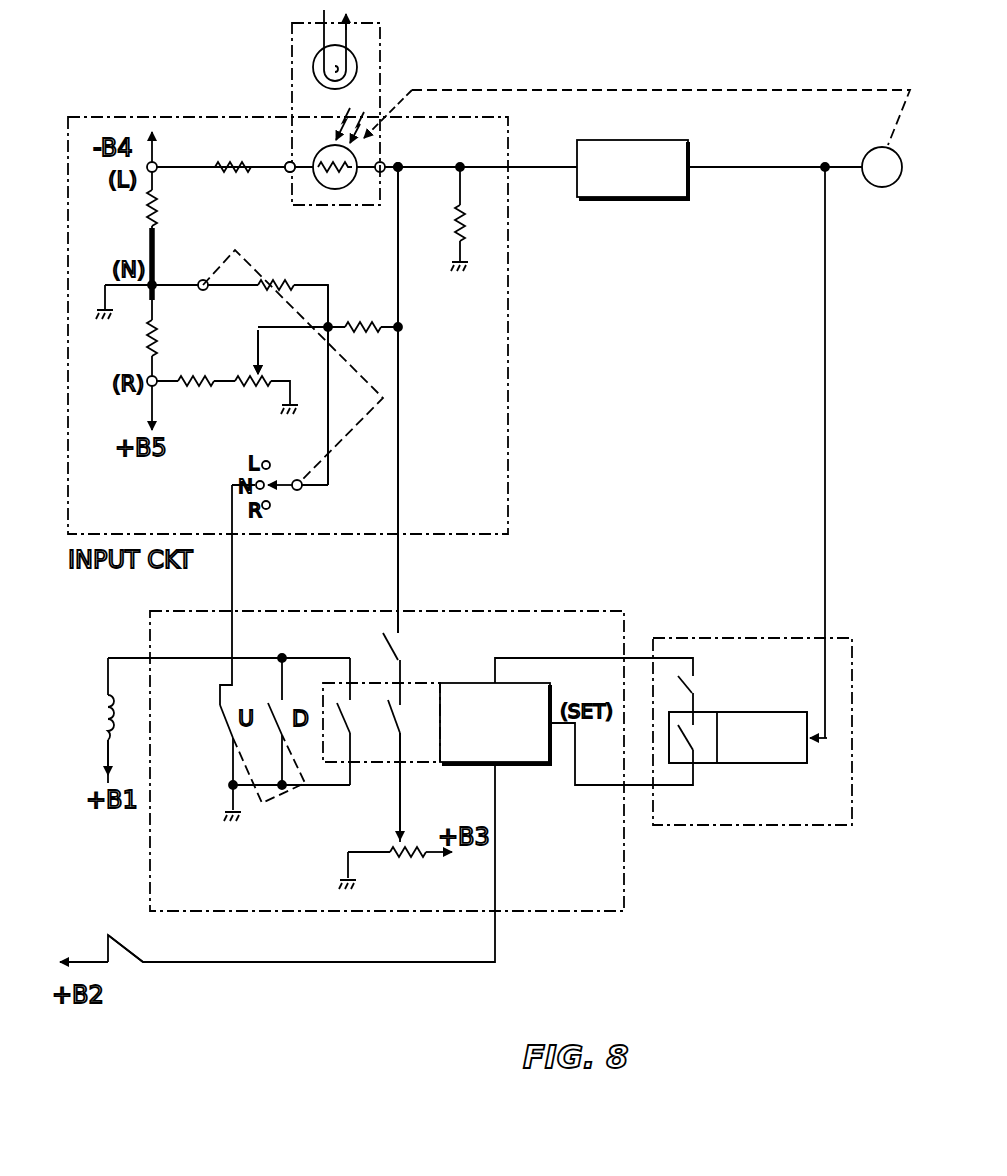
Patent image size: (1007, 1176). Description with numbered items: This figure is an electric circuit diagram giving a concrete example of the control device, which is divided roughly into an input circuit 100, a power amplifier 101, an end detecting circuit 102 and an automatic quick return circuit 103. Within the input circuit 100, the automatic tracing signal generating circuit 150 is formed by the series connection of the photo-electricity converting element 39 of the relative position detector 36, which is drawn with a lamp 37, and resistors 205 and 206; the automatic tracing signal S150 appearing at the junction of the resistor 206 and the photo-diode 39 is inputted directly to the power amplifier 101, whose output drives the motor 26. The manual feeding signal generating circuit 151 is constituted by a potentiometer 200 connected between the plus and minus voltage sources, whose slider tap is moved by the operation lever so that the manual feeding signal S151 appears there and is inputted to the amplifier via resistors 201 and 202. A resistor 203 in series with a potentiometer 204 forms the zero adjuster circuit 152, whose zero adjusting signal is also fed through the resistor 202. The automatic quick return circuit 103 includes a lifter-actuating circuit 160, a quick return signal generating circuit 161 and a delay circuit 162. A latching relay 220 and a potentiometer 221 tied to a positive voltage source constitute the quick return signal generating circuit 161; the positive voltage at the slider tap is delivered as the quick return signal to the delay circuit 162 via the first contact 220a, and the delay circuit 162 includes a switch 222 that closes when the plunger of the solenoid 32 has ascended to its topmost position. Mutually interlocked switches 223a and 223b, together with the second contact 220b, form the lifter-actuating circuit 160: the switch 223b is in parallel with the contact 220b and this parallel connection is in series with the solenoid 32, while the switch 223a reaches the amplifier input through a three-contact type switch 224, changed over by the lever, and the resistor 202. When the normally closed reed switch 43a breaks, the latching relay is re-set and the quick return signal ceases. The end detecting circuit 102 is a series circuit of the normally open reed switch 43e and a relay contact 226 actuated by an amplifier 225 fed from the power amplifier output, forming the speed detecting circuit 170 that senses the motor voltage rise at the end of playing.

The relative position detector 36 is at (382, 52).
The lamp 37 is at (313, 67).
The photo-electricity converting element 39 is at (343, 180).
The automatic tracing signal generating circuit 150 is at (285, 158).
The resistor 205 is at (240, 172).
The automatic tracing signal S150 is at (398, 163).
The power amplifier 101 is at (612, 140).
The motor 26 is at (874, 187).
The resistor 206 is at (436, 228).
The manual feeding signal generating circuit 151 is at (130, 243).
The potentiometer 200 is at (157, 322).
The resistor 201 is at (275, 290).
The manual feeding signal S151 is at (330, 305).
The resistor 202 is at (388, 332).
The potentiometer 204 is at (264, 378).
The resistor 203 is at (198, 383).
The zero adjuster circuit 152 is at (240, 405).
The input circuit 100 is at (508, 452).
The three-contact type switch 224 is at (285, 490).
The delay circuit 162 is at (392, 622).
The automatic quick return circuit 103 is at (540, 612).
The end detecting circuit 102 is at (727, 638).
The second contact 220b is at (350, 720).
The switch 222 is at (395, 652).
The latching relay 220 is at (472, 683).
The reed switch 43e is at (700, 690).
The amplifier 225 is at (755, 712).
The solenoid 32 is at (100, 722).
The switch 223a is at (222, 718).
The switch 223b is at (275, 722).
The first contact 220a is at (398, 725).
The relay contact 226 is at (695, 740).
The speed detecting circuit 170 is at (765, 770).
The lifter-actuating circuit 160 is at (280, 806).
The quick return signal generating circuit 161 is at (512, 778).
The potentiometer 221 is at (398, 858).
The reed switch 43a is at (126, 950).